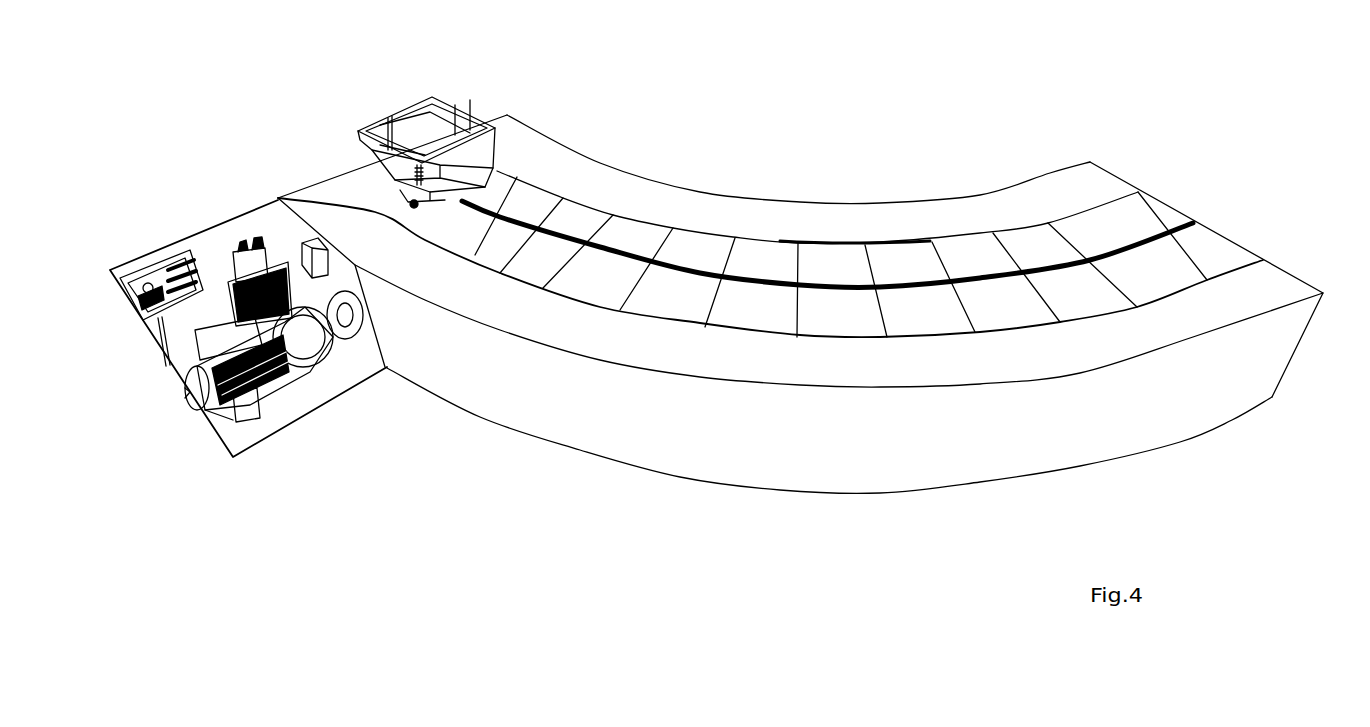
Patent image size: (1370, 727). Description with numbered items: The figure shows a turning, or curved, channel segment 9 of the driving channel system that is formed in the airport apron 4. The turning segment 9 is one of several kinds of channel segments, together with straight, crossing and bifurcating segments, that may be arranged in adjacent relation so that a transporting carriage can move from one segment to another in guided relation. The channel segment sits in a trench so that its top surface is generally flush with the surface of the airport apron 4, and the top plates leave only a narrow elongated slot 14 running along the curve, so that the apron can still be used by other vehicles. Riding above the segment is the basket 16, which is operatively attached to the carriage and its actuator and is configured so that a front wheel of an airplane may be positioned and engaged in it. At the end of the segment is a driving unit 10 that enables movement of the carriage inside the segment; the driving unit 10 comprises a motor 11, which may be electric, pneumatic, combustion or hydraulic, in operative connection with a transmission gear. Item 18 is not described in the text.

The airport apron 4 is at (765, 95).
The turning segment 9 is at (1192, 393).
The driving unit 10 is at (213, 192).
The motor 11 is at (268, 387).
The elongated slot 14 is at (1193, 223).
The basket 16 is at (427, 148).
The side band of conveyor 18 is at (1088, 230).